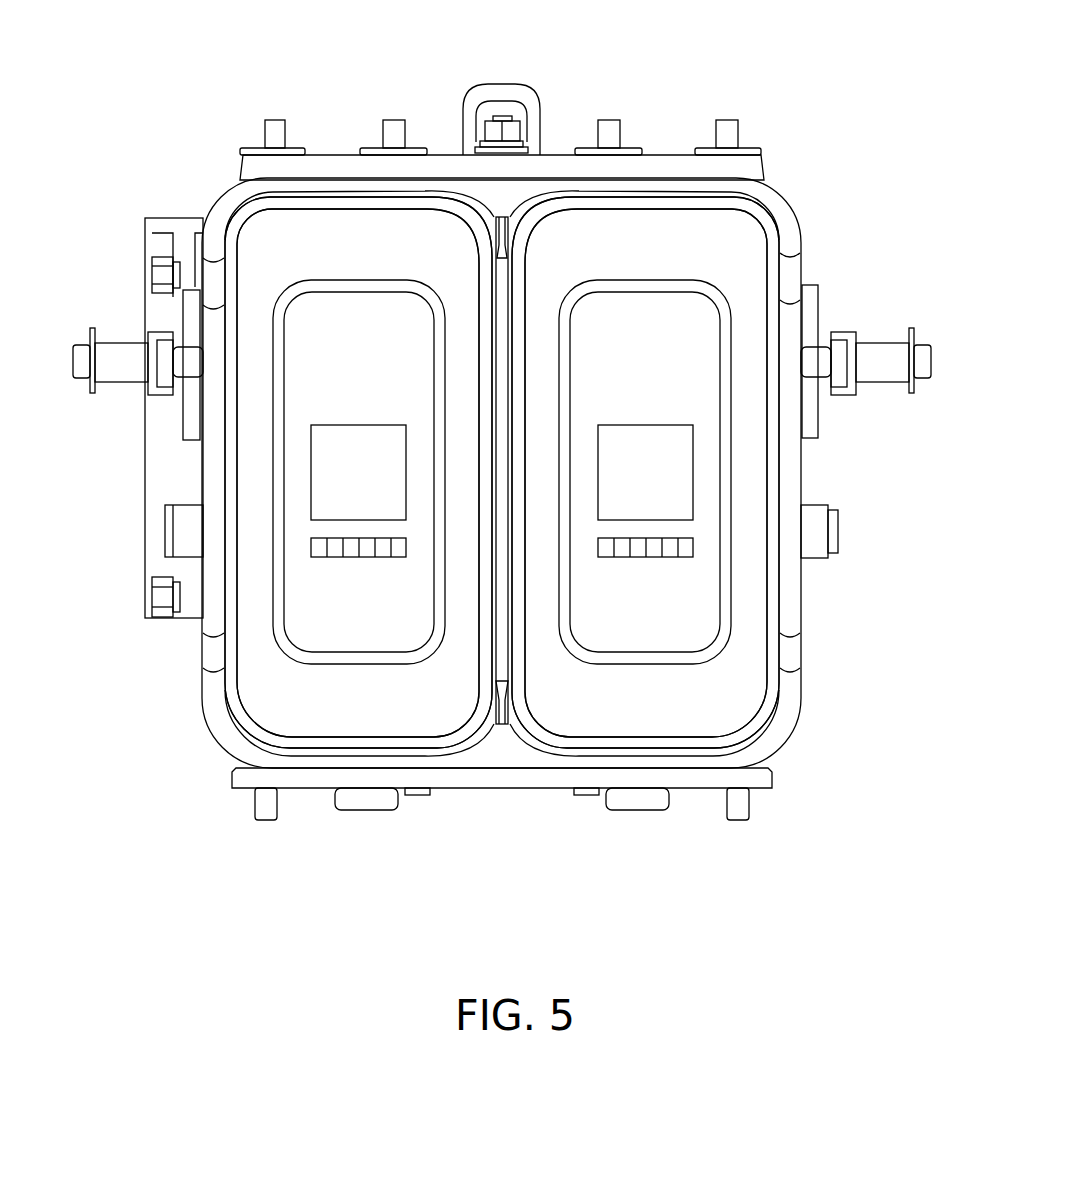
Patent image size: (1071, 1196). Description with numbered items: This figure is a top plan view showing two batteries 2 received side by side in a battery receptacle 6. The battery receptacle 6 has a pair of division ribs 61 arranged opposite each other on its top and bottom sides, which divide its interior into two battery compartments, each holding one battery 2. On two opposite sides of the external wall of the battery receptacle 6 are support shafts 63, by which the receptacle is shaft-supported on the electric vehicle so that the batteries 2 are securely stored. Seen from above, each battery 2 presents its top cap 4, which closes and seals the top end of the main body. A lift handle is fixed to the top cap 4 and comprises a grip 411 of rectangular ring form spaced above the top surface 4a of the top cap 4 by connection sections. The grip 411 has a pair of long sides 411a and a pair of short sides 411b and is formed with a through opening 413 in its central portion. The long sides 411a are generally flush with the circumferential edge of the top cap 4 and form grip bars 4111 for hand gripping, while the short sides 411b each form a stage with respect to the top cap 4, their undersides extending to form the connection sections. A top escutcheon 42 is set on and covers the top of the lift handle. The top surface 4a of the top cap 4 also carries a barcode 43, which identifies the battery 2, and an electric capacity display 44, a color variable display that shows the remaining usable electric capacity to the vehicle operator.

The battery 2 is at (810, 157).
The top cap 4 is at (413, 752).
The top surface 4a is at (340, 612).
The battery receptacle 6 is at (458, 780).
The top escutcheon 42 is at (287, 697).
The barcode 43 is at (335, 467).
The electric capacity display 44 is at (318, 548).
The division ribs 61 is at (523, 253).
The support shafts 63 is at (118, 350).
The grip 411 is at (240, 717).
The long sides 411a is at (502, 473).
The short sides 411b is at (345, 203).
The through opening 413 is at (290, 377).
The grip bars 4111 is at (518, 408).